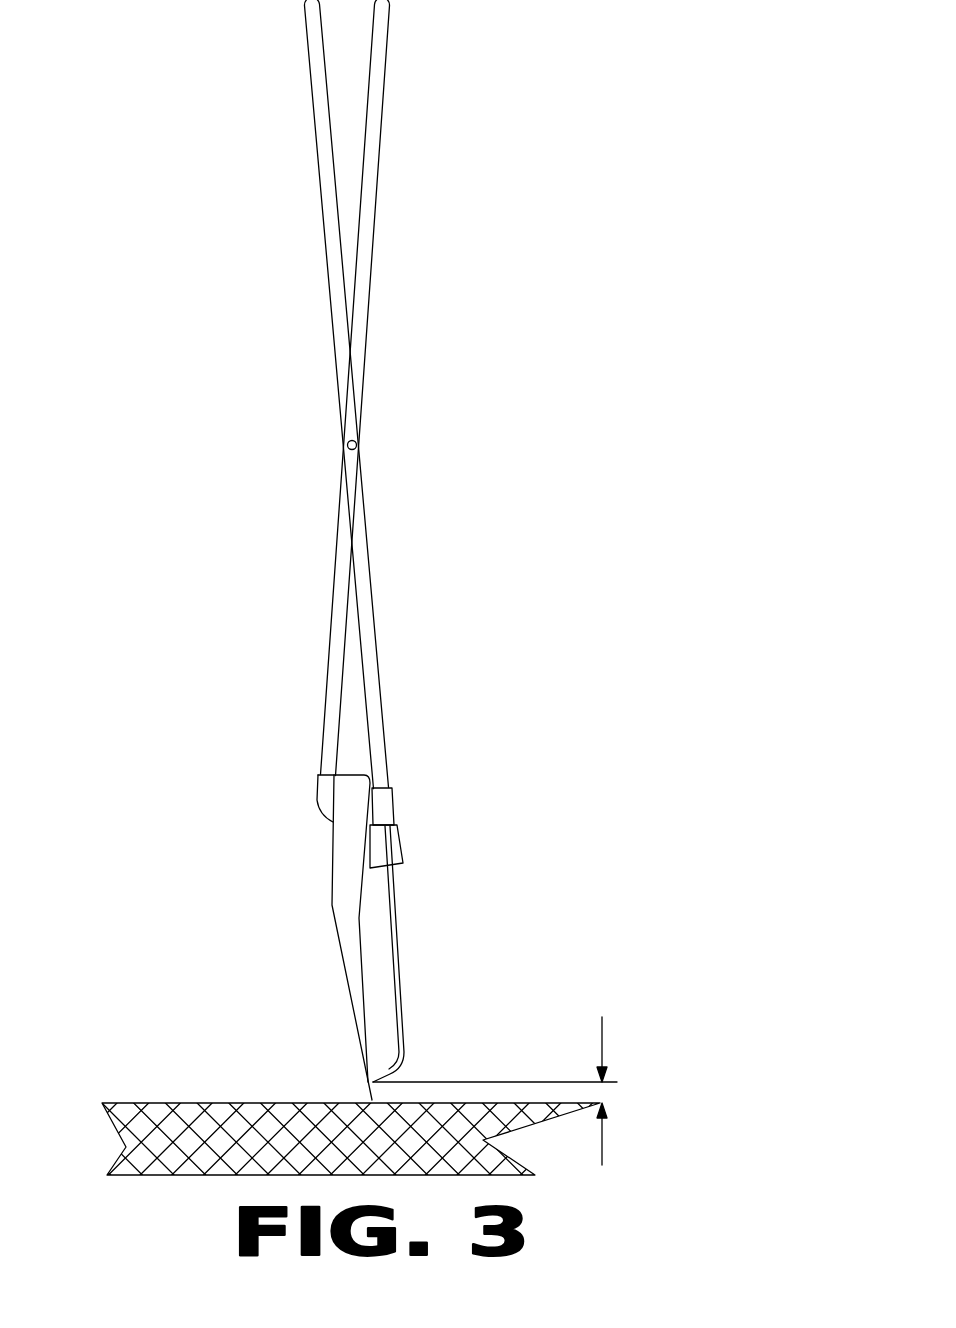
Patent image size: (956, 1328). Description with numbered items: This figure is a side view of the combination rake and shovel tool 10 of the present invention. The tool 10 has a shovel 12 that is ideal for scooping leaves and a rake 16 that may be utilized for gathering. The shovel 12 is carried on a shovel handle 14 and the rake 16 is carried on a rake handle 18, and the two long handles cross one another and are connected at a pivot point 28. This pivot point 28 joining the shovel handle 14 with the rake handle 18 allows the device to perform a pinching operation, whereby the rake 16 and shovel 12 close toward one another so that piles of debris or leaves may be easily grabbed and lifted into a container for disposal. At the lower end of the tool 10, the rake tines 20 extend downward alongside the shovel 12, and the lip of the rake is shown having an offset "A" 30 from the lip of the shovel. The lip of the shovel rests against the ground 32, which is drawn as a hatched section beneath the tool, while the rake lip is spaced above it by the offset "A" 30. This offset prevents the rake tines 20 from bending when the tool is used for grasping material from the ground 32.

The combination rake and shovel tool 10 is at (545, 175).
The shovel 12 is at (289, 937).
The shovel handle 14 is at (398, 388).
The rake 16 is at (460, 830).
The rake handle 18 is at (293, 394).
The rake tines 20 is at (464, 954).
The pivot point 28 is at (419, 451).
The offset "A" 30 is at (602, 1045).
The ground 32 is at (340, 1091).